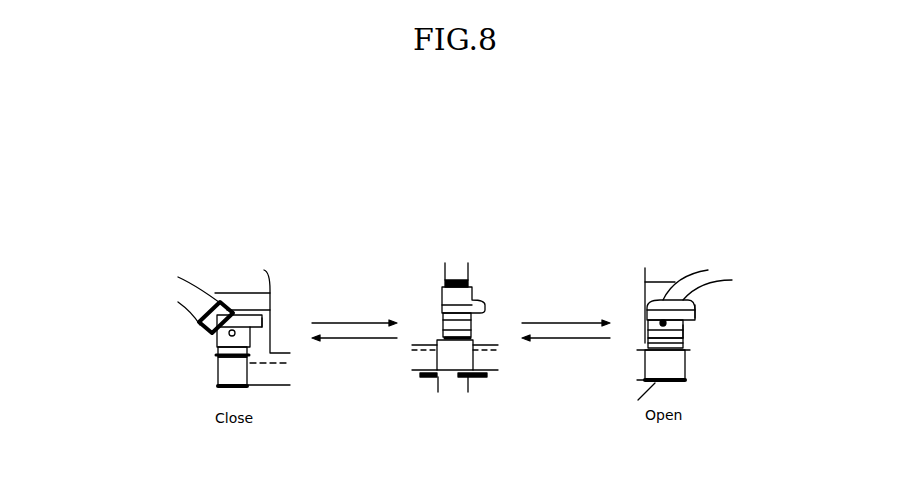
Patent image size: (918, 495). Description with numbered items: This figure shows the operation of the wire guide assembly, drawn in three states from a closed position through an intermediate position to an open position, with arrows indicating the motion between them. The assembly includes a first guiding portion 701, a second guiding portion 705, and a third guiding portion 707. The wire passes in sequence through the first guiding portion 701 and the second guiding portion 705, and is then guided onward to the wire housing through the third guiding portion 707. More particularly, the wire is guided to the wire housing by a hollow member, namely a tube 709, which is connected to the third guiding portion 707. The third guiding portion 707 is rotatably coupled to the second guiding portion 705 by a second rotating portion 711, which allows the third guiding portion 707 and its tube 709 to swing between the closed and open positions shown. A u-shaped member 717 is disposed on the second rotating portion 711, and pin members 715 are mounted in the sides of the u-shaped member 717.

The first guiding portion 701 is at (209, 382).
The second guiding portion 705 is at (277, 387).
The third guiding portion 707 is at (638, 255).
The tube 709 is at (199, 292).
The second rotating portion 711 is at (215, 357).
The pin members 715 is at (685, 328).
The u-shaped member 717 is at (215, 335).